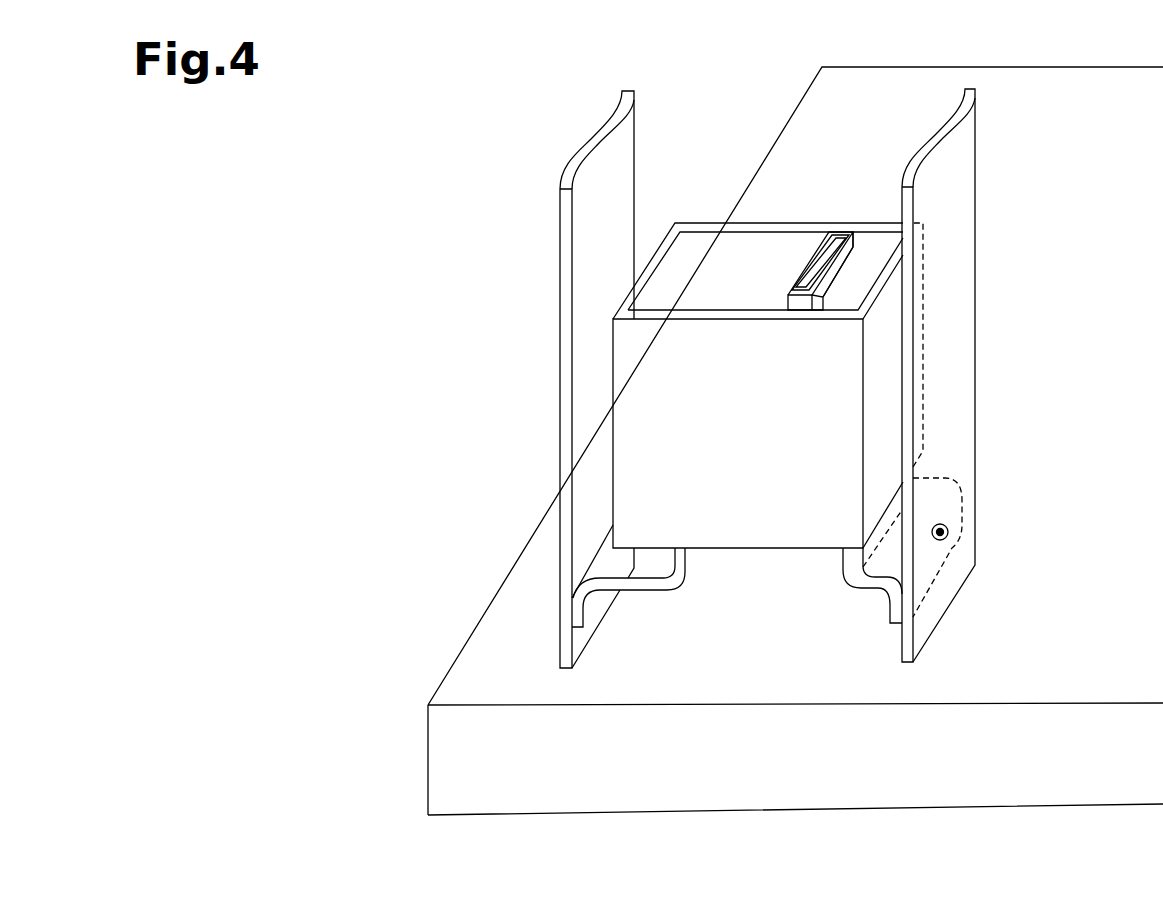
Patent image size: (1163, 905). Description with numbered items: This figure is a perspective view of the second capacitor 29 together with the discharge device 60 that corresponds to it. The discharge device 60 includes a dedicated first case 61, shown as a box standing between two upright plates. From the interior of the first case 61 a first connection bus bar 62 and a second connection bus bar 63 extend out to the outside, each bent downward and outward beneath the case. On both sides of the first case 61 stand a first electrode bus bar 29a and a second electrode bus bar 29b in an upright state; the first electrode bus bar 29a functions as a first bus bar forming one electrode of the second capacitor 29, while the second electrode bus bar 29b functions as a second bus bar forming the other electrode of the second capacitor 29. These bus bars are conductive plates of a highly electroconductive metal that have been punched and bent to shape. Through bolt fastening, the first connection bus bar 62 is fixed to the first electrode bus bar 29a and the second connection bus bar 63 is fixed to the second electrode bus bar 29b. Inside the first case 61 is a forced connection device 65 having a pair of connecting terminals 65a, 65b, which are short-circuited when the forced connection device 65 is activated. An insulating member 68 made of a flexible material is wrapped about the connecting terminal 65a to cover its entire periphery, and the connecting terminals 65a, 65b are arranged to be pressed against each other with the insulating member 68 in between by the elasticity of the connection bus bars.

The second capacitor 29 is at (470, 652).
The first electrode bus bar 29a is at (560, 386).
The second electrode bus bar 29b is at (975, 310).
The discharge device 60 is at (848, 172).
The first case 61 is at (740, 552).
The first connection bus bar 62 is at (637, 592).
The second connection bus bar 63 is at (877, 590).
The forced connection device 65 is at (798, 313).
The connecting terminal 65a is at (822, 260).
The connecting terminal 65b is at (838, 300).
The insulating member 68 is at (788, 296).